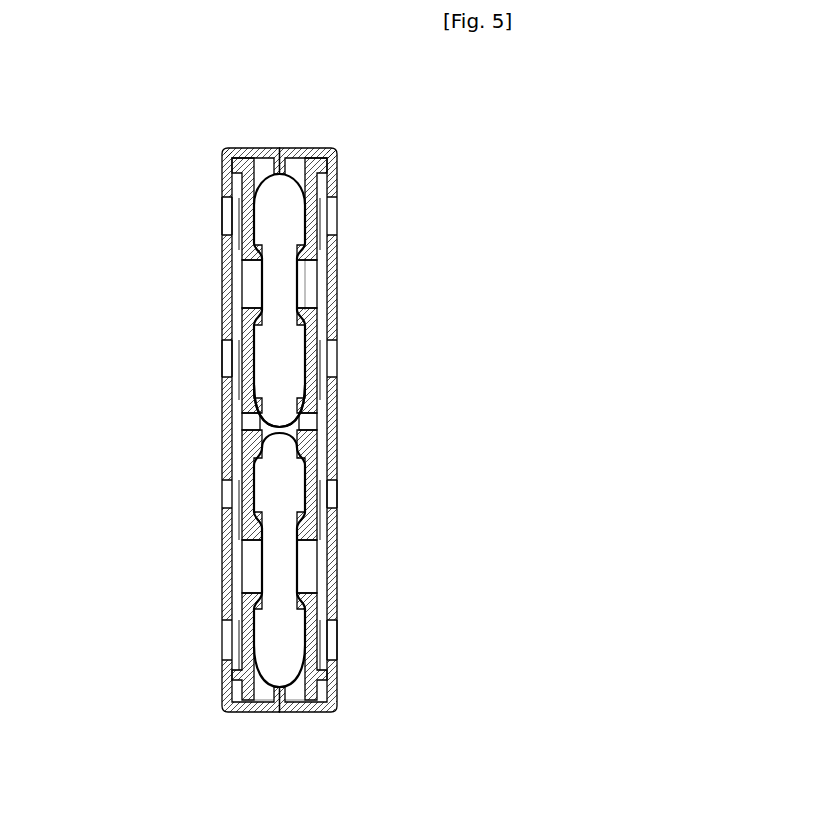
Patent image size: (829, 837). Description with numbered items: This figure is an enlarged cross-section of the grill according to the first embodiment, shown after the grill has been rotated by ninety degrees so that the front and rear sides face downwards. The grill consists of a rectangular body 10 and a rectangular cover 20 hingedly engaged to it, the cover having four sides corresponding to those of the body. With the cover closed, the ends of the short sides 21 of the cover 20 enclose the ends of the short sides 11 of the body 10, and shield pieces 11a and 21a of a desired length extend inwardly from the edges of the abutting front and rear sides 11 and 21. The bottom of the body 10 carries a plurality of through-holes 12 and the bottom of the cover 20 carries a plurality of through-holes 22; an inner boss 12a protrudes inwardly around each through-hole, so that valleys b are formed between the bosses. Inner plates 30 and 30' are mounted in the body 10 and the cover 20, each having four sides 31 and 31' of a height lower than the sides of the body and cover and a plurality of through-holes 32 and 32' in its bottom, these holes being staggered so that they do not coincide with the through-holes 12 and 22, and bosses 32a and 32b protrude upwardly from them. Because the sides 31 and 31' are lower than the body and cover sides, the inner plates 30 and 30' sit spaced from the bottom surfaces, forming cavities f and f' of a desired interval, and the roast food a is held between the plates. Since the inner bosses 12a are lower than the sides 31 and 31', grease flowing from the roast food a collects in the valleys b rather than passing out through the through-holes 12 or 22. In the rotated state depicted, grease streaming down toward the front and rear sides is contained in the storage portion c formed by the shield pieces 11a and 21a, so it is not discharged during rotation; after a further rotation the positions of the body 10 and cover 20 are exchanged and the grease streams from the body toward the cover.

The body 10 is at (337, 571).
The cover 20 is at (222, 579).
The sides of the body 11 is at (287, 148).
The sides of the cover 21 is at (260, 148).
The shield piece 11a is at (308, 150).
The shield piece 21a is at (253, 150).
The through-holes 12 is at (322, 500).
The through-holes 22 is at (232, 360).
The inner boss 12a is at (248, 512).
The sides of the inner plate 31 is at (366, 233).
The sides of the inner plate 31' is at (193, 233).
The through-holes 32 is at (357, 424).
The through-holes 32' is at (187, 424).
The boss 32a is at (250, 455).
The boss 32b is at (255, 398).
The inner plate 30 is at (394, 651).
The inner plate 30' is at (165, 653).
The roast food a is at (318, 282).
The cavity f is at (359, 458).
The cavity f' is at (205, 300).
The valley b is at (228, 697).
The storage portion c is at (260, 700).